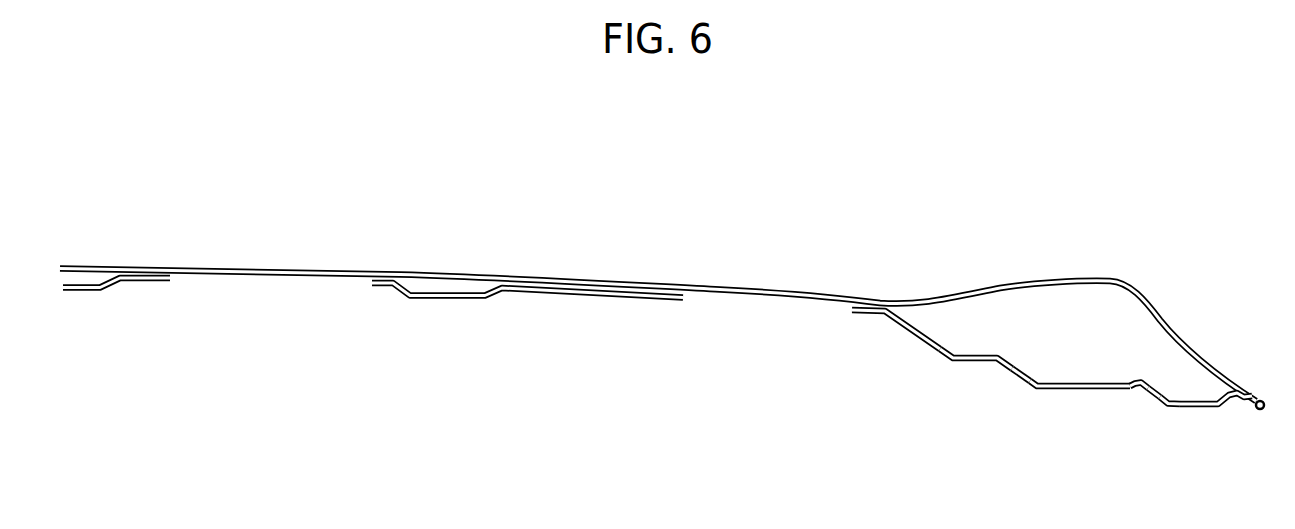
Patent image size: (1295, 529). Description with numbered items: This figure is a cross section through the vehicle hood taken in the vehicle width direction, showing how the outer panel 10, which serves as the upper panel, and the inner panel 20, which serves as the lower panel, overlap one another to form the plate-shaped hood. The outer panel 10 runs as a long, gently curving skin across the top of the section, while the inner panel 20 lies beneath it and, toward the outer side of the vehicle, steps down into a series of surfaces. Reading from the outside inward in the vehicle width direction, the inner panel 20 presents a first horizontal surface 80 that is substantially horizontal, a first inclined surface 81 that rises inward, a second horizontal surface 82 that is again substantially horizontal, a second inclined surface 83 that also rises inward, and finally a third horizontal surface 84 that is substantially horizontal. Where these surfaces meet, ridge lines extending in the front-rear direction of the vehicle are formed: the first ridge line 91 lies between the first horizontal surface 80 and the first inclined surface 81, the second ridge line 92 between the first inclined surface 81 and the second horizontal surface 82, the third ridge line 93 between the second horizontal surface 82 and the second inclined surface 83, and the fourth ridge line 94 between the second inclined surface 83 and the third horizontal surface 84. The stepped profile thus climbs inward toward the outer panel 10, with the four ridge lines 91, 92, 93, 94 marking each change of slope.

The outer panel 10 is at (781, 292).
The inner panel 20 is at (870, 314).
The first horizontal surface 80 is at (1098, 333).
The first inclined surface 81 is at (1147, 396).
The second horizontal surface 82 is at (1080, 389).
The second inclined surface 83 is at (1017, 373).
The third horizontal surface 84 is at (977, 363).
The first ridge line 91 is at (1170, 402).
The second ridge line 92 is at (1140, 385).
The third ridge line 93 is at (1037, 386).
The fourth ridge line 94 is at (997, 357).